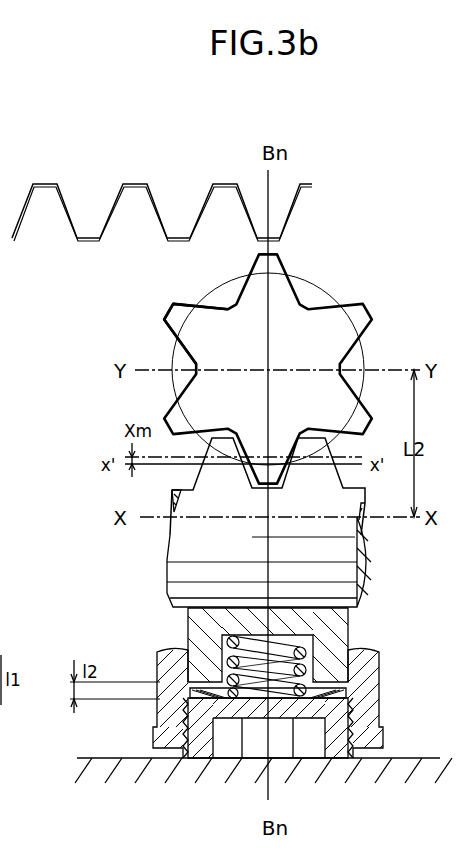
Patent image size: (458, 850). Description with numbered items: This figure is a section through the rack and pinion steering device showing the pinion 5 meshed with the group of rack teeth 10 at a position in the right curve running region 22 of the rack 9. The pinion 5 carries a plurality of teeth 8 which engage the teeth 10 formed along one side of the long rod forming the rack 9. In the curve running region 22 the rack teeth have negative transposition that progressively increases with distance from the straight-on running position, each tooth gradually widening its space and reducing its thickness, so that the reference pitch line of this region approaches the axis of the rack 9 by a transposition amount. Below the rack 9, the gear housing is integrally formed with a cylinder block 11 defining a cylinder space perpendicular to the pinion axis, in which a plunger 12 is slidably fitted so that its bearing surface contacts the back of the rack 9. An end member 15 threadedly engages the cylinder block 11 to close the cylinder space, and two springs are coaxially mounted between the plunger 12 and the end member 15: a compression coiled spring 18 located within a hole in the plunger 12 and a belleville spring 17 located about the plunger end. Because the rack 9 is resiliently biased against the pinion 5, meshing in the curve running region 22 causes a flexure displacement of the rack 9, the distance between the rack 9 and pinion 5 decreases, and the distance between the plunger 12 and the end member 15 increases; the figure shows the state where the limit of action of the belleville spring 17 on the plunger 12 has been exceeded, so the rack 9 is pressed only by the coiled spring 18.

The curve running region 22 is at (8, 137).
The pinion 5 is at (370, 309).
The teeth 8 is at (176, 304).
The teeth 10 is at (206, 477).
The rack 9 is at (168, 574).
The plunger 12 is at (350, 627).
The compression coiled spring 18 is at (305, 652).
The belleville spring 17 is at (350, 692).
The cylinder block 11 is at (163, 663).
The end member 15 is at (336, 752).